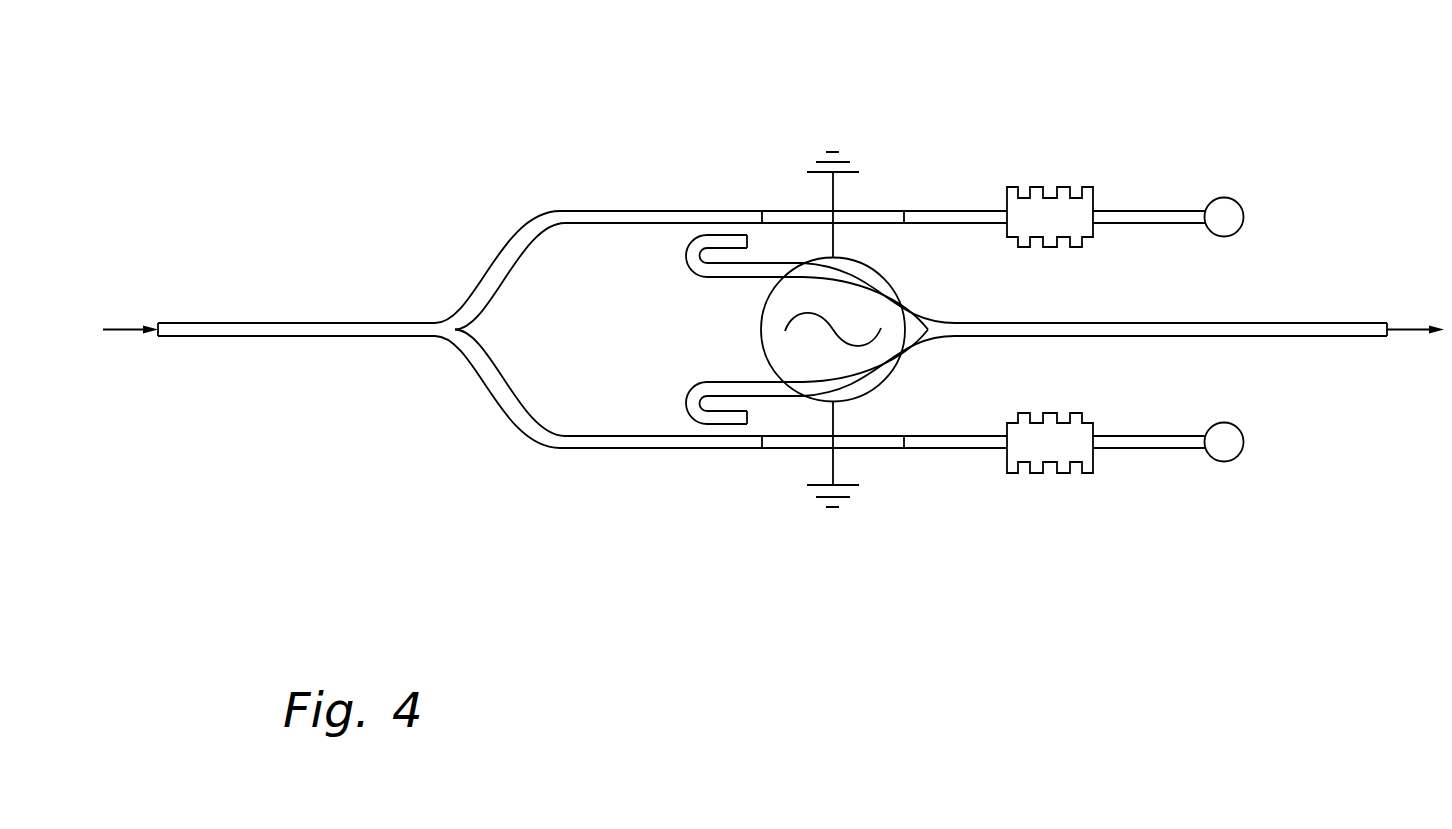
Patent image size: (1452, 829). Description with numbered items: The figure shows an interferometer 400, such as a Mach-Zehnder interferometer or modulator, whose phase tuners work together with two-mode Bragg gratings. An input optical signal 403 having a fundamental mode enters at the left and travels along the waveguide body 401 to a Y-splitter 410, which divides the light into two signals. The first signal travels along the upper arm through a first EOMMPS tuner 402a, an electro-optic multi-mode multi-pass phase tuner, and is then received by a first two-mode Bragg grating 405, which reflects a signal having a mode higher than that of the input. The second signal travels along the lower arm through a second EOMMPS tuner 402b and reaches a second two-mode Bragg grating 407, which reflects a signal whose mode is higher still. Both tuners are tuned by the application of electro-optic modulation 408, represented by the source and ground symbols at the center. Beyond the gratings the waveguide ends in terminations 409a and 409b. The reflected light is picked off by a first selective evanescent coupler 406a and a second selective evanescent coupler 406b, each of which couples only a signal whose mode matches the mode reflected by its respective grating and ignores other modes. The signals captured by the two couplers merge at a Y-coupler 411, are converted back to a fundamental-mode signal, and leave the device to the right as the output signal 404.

The interferometer 400 is at (213, 110).
The waveguide body 401 is at (282, 322).
The first EOMMPS tuner 402a is at (803, 218).
The second EOMMPS tuner 402b is at (803, 442).
The input optical signal 403 is at (122, 328).
The output signal 404 is at (1405, 328).
The first two-mode Bragg grating 405 is at (1087, 187).
The first selective evanescent coupler 406a is at (685, 252).
The second selective evanescent coupler 406b is at (685, 403).
The second two-mode Bragg grating 407 is at (1083, 473).
The electro-optic modulation 408 is at (830, 510).
The termination 409a is at (1222, 197).
The termination 409b is at (1221, 465).
The Y-splitter 410 is at (446, 332).
The Y-coupler 411 is at (936, 330).